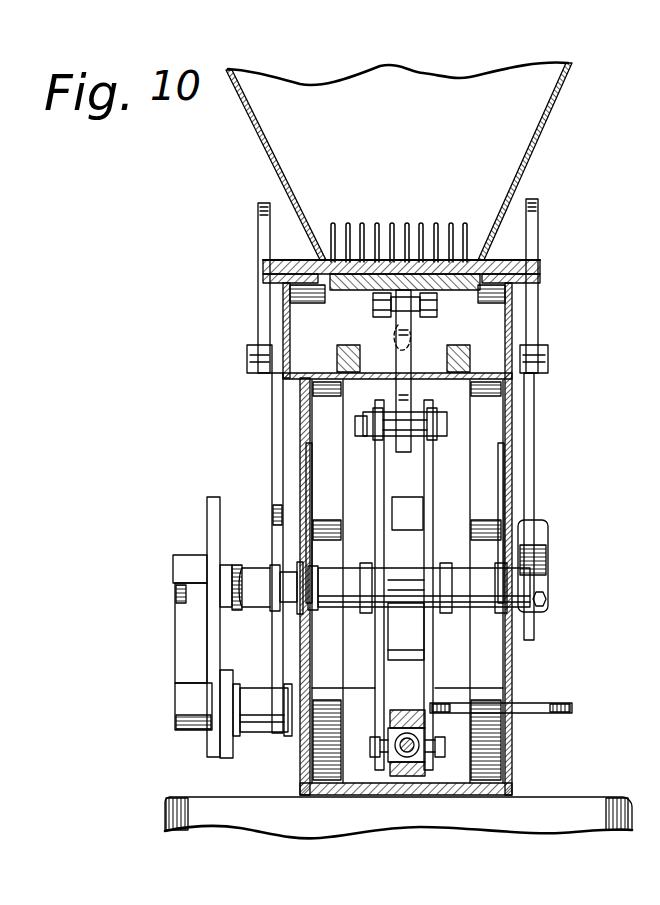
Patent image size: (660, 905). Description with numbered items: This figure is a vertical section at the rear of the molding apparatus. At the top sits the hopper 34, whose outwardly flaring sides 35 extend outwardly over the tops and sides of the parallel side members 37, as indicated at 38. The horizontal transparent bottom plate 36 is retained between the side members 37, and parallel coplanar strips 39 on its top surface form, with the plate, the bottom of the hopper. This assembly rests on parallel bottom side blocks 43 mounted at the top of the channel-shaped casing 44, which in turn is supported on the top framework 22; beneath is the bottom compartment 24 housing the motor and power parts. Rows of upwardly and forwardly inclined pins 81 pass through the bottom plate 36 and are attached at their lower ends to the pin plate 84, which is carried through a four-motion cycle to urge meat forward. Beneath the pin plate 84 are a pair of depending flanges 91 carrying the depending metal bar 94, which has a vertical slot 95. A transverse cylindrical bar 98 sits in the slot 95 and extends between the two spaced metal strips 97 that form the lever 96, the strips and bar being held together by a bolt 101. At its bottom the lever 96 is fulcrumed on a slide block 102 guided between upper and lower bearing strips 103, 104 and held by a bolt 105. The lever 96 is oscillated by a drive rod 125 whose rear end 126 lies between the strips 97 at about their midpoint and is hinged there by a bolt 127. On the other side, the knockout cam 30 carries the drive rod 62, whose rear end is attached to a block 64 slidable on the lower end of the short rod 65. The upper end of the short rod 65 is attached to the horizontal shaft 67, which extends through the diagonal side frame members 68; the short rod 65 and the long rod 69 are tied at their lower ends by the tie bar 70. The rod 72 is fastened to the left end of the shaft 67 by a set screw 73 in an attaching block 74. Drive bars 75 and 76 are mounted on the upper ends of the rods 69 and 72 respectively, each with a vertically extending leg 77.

The hopper 34 is at (410, 138).
The hopper sides 35 is at (258, 133).
The bottom plate 36 is at (333, 245).
The pins 81 is at (363, 226).
The parallel coplanar strips 39 is at (460, 226).
The side members 37 is at (263, 275).
The hopper side extension over side members 38 is at (279, 260).
The pin plate 84 is at (352, 290).
The vertically extending leg 77 is at (258, 233).
The drive bar 75 is at (262, 325).
The second drive bar 76 is at (540, 330).
The casing 44 is at (513, 316).
The bottom side blocks 43 is at (318, 303).
The depending flanges 91 is at (389, 317).
The depending metal bar 94 is at (396, 394).
The vertical slot 95 is at (409, 338).
The top framework 22 is at (297, 414).
The long rod 69 is at (272, 462).
The rod 72 is at (528, 432).
The side frame members 68 is at (306, 521).
The transverse bar 98 is at (417, 412).
The bolt 101 is at (368, 440).
The metal strips 97 is at (426, 476).
The lever 96 is at (431, 503).
The drive rod 125 is at (421, 525).
The rear end of drive rod 126 is at (418, 566).
The bolt 127 is at (437, 597).
The horizontal shaft 67 is at (248, 578).
The short rod 65 is at (234, 647).
The attaching block 74 is at (545, 575).
The set screw 73 is at (540, 607).
The knockout cam 30 is at (207, 543).
The drive rod 62 is at (188, 640).
The block 64 is at (220, 746).
The tie bar 70 is at (250, 719).
The upper bearing strip 103 is at (405, 712).
The slide block 102 is at (428, 758).
The lower bearing strip 104 is at (392, 768).
The bolt 105 is at (376, 746).
The bottom compartment 24 is at (594, 820).